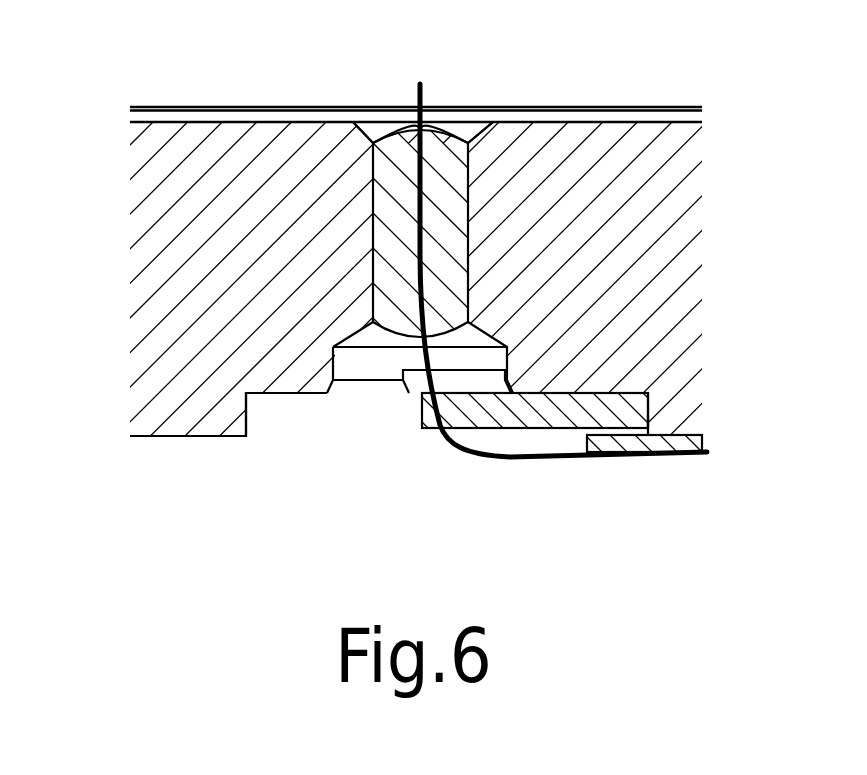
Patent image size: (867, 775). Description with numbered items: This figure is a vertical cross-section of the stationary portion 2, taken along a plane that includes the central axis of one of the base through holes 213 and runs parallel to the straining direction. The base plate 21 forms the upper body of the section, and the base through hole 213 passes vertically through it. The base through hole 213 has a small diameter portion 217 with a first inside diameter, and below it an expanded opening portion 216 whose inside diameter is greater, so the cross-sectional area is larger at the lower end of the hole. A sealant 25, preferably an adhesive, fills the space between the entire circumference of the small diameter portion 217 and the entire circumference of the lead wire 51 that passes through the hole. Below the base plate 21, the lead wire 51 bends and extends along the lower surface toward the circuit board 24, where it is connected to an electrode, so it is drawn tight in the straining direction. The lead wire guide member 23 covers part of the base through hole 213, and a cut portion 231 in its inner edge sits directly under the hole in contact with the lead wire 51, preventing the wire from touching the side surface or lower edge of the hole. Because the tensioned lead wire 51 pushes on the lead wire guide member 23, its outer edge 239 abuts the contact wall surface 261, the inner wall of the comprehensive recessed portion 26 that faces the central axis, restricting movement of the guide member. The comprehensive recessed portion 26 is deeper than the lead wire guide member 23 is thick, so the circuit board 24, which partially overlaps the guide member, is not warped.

The stationary portion 2 is at (196, 62).
The base plate 21 is at (174, 145).
The sealant 25 is at (387, 269).
The base through hole 213 is at (405, 150).
The small diameter portion 217 is at (455, 170).
The expanded opening portion 216 is at (357, 362).
The cut portion 231 is at (426, 411).
The comprehensive recessed portion 26 is at (288, 408).
The lead wire guide member 23 is at (538, 415).
The outer edge 239 is at (650, 405).
The contact wall surface 261 is at (645, 420).
The circuit board 24 is at (662, 445).
The lead wire 51 is at (500, 460).